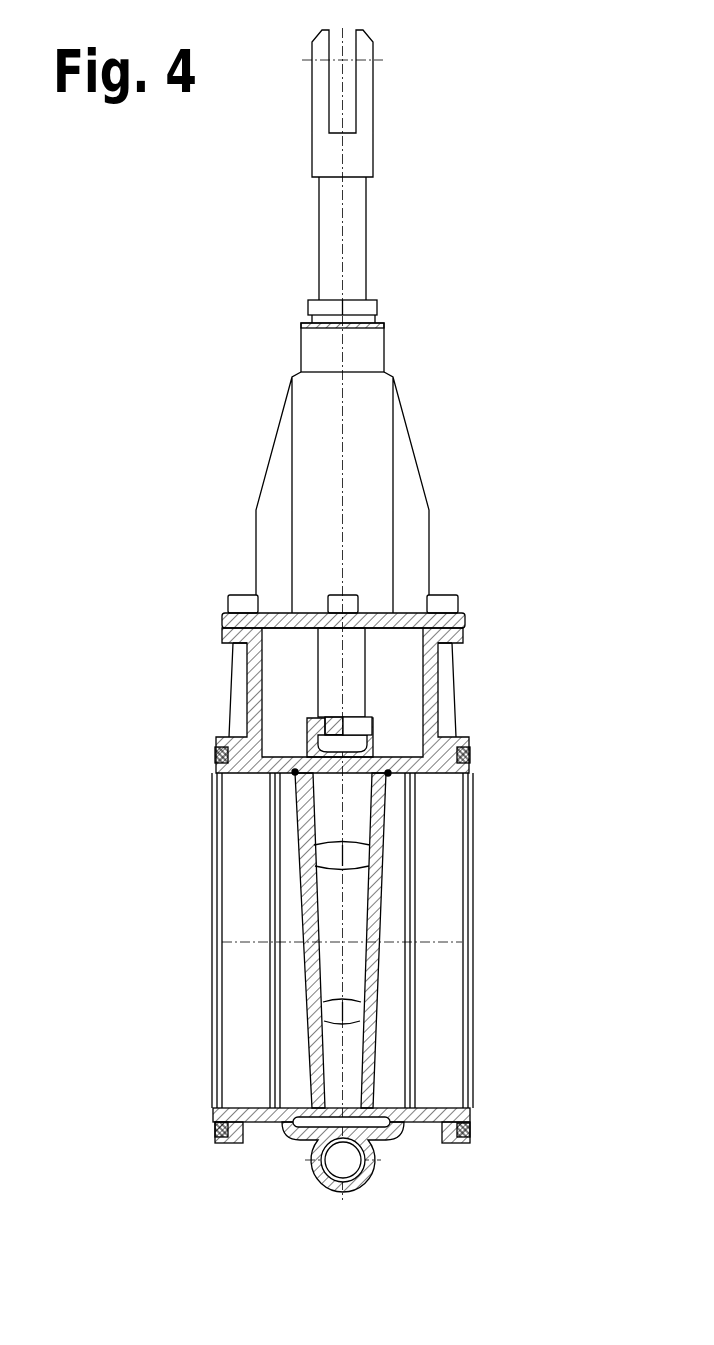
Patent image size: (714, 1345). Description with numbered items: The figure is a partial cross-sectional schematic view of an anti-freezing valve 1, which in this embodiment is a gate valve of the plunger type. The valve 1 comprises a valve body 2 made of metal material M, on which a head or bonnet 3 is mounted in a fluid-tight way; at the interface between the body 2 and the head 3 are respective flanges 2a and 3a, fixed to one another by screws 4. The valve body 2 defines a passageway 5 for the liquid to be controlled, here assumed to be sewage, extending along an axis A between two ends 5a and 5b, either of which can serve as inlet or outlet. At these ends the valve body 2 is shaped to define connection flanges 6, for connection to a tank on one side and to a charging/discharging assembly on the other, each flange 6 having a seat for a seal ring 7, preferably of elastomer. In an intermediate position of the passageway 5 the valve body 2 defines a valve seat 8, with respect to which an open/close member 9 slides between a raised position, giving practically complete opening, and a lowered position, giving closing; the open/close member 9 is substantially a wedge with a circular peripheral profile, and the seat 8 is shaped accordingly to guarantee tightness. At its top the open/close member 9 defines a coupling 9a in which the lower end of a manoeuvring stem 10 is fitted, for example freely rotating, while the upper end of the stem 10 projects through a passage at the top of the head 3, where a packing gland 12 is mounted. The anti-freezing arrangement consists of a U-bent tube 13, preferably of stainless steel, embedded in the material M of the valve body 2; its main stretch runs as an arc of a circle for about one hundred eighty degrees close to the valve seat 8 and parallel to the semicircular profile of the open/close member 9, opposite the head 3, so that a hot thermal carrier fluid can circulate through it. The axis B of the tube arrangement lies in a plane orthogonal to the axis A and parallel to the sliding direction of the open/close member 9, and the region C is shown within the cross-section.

The anti-freezing valve 1 is at (203, 372).
The valve body 2 is at (401, 1147).
The flange 2a is at (223, 638).
The head or bonnet 3 is at (409, 413).
The flange 3a is at (462, 620).
The screws 4 is at (240, 596).
The passageway 5 is at (442, 893).
The end of the passageway 5a is at (443, 1107).
The end of the passageway 5b is at (245, 1110).
The connection flanges 6 is at (233, 1143).
The seal ring 7 is at (213, 753).
The valve seat 8 is at (388, 773).
The open/close member 9 is at (306, 966).
The coupling 9a is at (312, 722).
The manoeuvring stem 10 is at (370, 218).
The packing gland 12 is at (365, 305).
The tube 13 is at (319, 1180).
The axis of the passageway A is at (248, 940).
The axis B is at (345, 1160).
The central chamber C is at (345, 815).
The metal material M is at (436, 740).